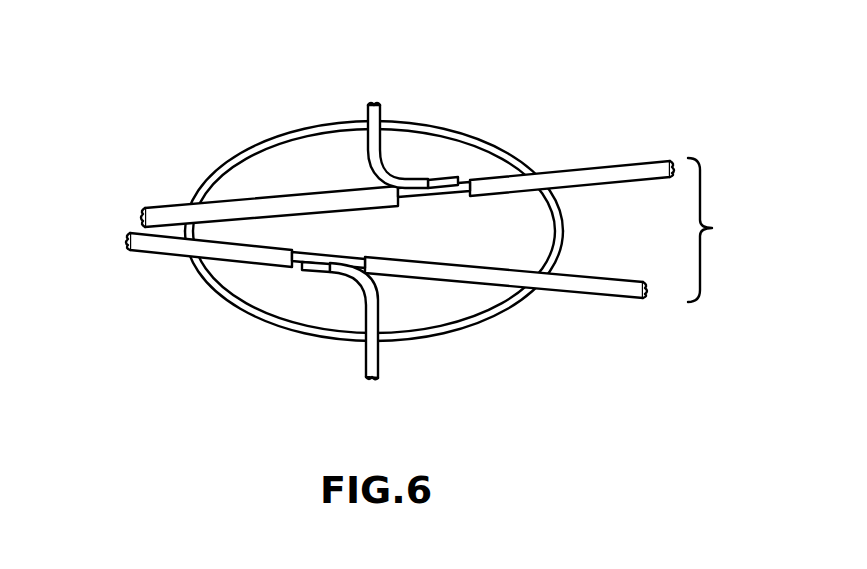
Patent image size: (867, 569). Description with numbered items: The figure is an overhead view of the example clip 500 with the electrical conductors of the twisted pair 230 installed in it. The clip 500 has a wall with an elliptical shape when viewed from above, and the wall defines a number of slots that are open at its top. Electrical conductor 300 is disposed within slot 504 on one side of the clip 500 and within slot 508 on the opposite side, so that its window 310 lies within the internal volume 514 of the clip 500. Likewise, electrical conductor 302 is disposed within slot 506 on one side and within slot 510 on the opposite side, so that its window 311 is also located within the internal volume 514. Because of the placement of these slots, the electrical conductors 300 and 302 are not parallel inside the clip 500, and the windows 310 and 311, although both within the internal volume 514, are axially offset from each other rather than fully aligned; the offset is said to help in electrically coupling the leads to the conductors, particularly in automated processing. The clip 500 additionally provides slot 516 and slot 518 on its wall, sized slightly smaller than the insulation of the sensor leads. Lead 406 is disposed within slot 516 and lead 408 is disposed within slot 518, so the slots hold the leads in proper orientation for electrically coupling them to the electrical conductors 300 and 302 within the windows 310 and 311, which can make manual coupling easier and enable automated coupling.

The clip 500 is at (439, 224).
The lead 406 is at (380, 119).
The slot 516 is at (396, 117).
The window 310 is at (457, 174).
The slot 508 is at (523, 164).
The twisted pair 230 is at (714, 227).
The electrical conductor 300 is at (168, 208).
The slot 504 is at (193, 204).
The window 311 is at (333, 242).
The electrical conductor 302 is at (168, 252).
The slot 506 is at (196, 265).
The lead 408 is at (372, 346).
The slot 518 is at (389, 346).
The internal volume 514 is at (440, 298).
The slot 510 is at (556, 297).